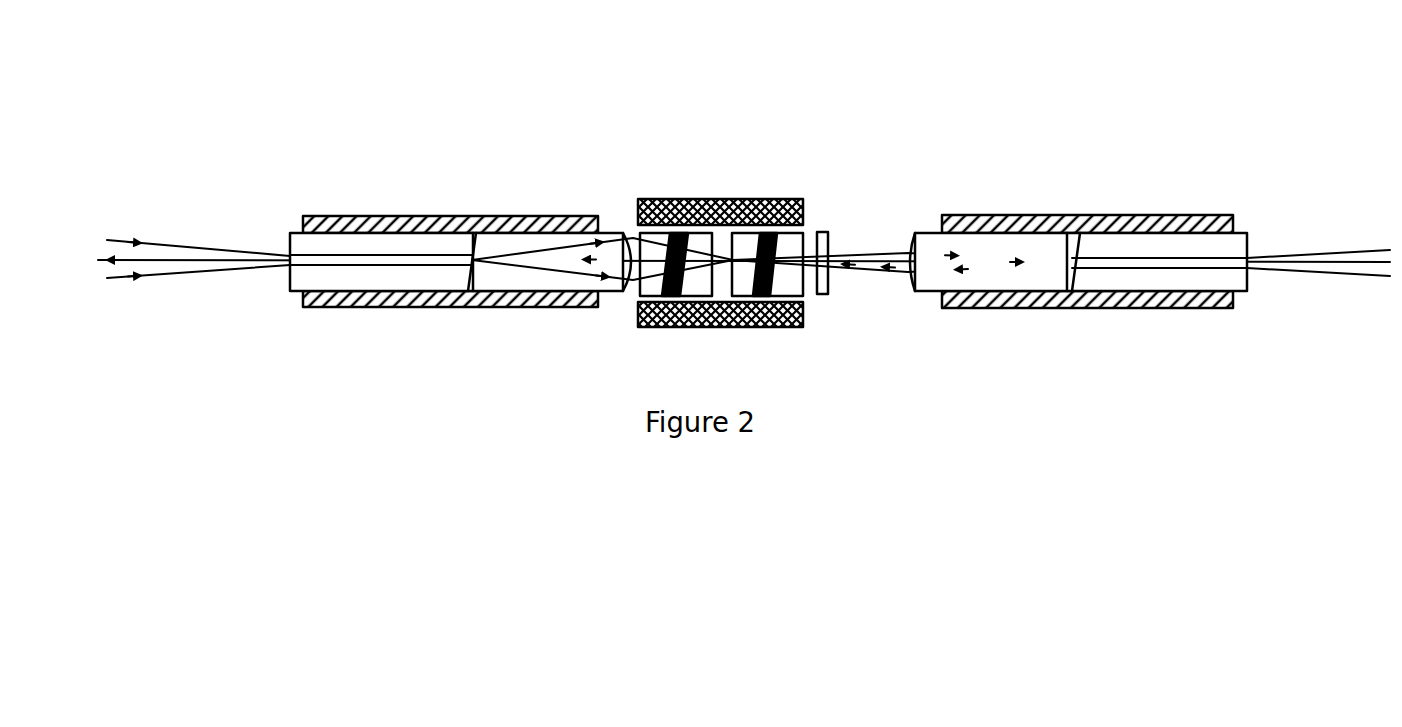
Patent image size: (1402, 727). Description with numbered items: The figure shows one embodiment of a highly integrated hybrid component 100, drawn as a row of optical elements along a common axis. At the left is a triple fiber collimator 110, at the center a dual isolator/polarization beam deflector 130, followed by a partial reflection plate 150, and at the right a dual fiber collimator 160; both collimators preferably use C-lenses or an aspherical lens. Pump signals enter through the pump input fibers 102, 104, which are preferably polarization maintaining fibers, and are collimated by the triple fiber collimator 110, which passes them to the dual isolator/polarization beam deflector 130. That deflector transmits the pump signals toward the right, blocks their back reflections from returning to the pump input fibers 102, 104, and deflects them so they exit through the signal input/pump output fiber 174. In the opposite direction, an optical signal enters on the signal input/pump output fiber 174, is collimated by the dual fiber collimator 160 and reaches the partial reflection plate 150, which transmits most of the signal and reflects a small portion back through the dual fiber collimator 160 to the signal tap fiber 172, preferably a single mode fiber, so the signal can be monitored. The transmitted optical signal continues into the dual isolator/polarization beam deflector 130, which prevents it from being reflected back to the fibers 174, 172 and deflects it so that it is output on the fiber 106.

The highly integrated hybrid component 100 is at (725, 25).
The pump input fiber 102 is at (359, 226).
The pump input fiber 104 is at (246, 280).
The fiber 106 is at (156, 260).
The triple fiber collimator 110 is at (656, 187).
The dual isolator/polarization beam deflector 130 is at (810, 159).
The partial reflection plate 150 is at (828, 232).
The dual fiber collimator 160 is at (1258, 128).
The signal tap fiber 172 is at (1330, 262).
The signal input/pump output fiber 174 is at (1330, 262).